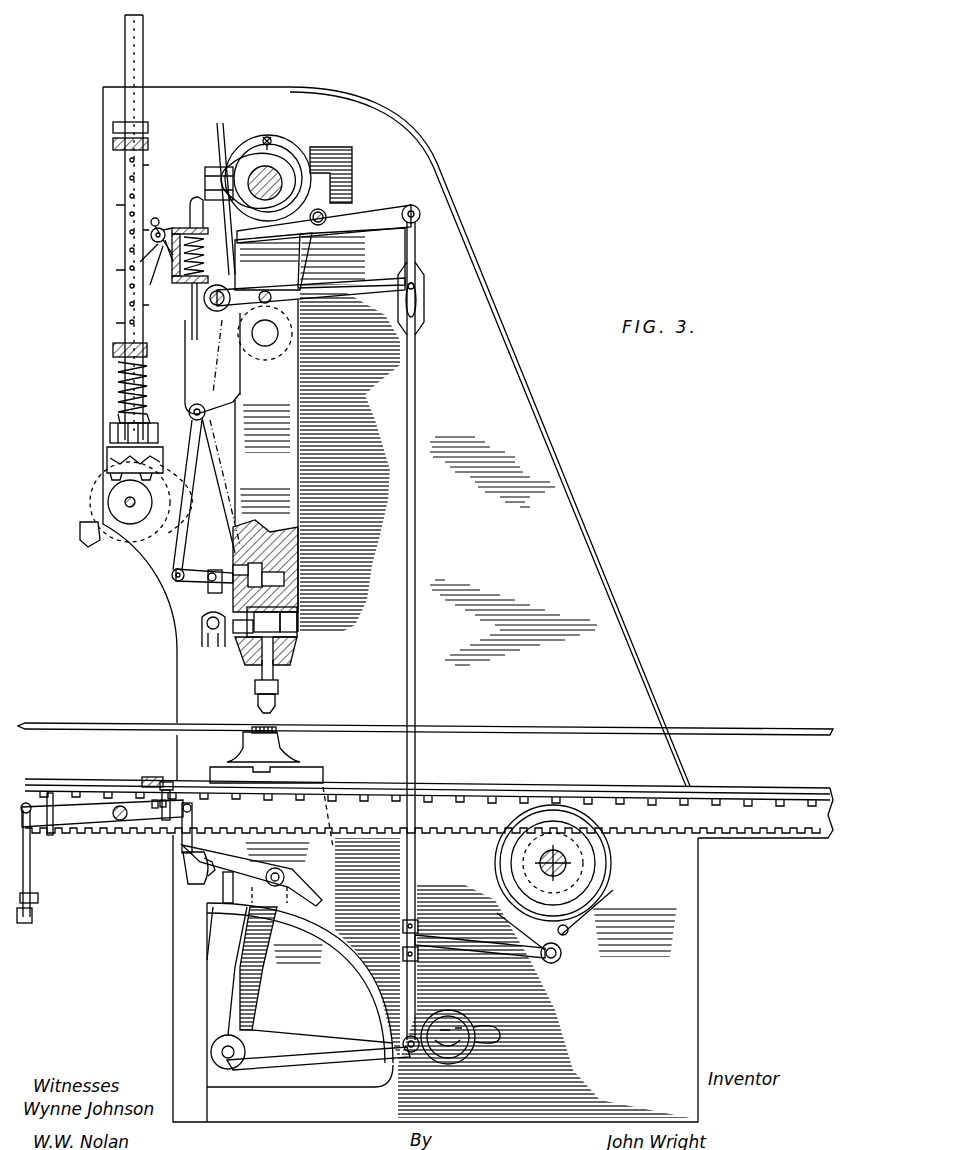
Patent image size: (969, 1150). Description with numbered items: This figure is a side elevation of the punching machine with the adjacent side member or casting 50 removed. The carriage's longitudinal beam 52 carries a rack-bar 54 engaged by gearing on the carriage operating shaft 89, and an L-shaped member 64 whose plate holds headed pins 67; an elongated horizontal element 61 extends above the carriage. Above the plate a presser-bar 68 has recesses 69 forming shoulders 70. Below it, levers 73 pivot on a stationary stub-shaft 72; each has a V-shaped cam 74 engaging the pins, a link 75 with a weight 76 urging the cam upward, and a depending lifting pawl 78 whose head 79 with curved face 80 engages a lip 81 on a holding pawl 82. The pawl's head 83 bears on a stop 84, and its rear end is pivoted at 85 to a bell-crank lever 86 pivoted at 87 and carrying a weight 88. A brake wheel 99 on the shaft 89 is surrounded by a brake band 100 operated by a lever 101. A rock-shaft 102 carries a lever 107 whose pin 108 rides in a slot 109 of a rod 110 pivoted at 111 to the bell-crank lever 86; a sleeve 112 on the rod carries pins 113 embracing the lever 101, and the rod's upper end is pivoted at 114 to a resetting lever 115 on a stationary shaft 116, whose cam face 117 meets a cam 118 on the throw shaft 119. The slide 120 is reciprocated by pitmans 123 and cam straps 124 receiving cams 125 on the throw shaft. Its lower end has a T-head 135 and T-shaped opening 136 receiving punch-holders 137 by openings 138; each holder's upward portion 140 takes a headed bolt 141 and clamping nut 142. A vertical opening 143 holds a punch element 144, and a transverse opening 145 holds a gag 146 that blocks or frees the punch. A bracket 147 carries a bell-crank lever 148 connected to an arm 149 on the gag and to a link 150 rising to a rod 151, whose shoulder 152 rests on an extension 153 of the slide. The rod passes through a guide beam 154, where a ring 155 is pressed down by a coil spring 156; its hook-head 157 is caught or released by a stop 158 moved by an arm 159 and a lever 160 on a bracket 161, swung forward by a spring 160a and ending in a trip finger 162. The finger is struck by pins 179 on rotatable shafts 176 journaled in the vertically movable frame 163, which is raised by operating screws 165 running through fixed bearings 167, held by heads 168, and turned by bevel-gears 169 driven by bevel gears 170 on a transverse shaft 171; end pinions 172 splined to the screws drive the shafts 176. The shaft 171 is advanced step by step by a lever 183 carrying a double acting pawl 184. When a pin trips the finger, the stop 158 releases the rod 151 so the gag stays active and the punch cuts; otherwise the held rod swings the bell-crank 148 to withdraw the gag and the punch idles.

The side members or castings 50 is at (578, 522).
The longitudinal beams 52 is at (705, 782).
The rack-bars 54 is at (758, 836).
The blade 61 is at (695, 726).
The horizontal plate or member 64 is at (788, 792).
The headed vertically movable pins 67 is at (490, 780).
The presser-bars 68 is at (150, 777).
The openings or recesses 69 is at (170, 790).
The shoulders 70 is at (152, 804).
The stationary horizontal stub-shaft 72 is at (118, 822).
The levers 73 is at (65, 808).
The V-shaped portion or cam 74 is at (163, 808).
The link 75 is at (32, 872).
The weight 76 is at (38, 900).
The depending lifting pawl 78 is at (195, 830).
The head 79 is at (185, 855).
The curved face 80 is at (195, 868).
The lip or extension 81 is at (190, 884).
The holding pawl 82 is at (285, 878).
The head 83 is at (207, 920).
The stop 84 is at (228, 905).
The pivotal connection 85 is at (300, 895).
The bell-crank lever 86 is at (252, 1005).
The pivot 87 is at (222, 1058).
The weight 88 is at (385, 1016).
The carriage operating shaft 89 is at (570, 866).
The brake wheel 99 is at (590, 882).
The brake band 100 is at (580, 928).
The lever 101 is at (470, 942).
The rock-shaft 102 is at (275, 283).
The lever 107 is at (378, 292).
The pin 108 is at (425, 292).
The elongated slot 109 is at (418, 312).
The rod 110 is at (417, 628).
The pivot 111 is at (405, 1050).
The sleeve 112 is at (425, 928).
The pins or trunnions 113 is at (415, 925).
The pivot 114 is at (422, 214).
The resetting lever 115 is at (365, 210).
The stationary shaft 116 is at (325, 212).
The cam face 117 is at (226, 175).
The cam 118 is at (236, 180).
The throw shaft 119 is at (280, 175).
The slide or carriage 120 is at (290, 443).
The pitmans 123 is at (320, 256).
The cam straps 124 is at (277, 170).
The cams 125 is at (330, 160).
The T-head 135 is at (300, 588).
The T-shaped opening 136 is at (300, 568).
The punch-holders 137 is at (292, 650).
The openings 138 is at (300, 598).
The upwardly extending portion 140 is at (228, 545).
The headed bolt 141 is at (264, 545).
The clamping nut 142 is at (230, 567).
The vertical opening 143 is at (280, 668).
The headed punch element 144 is at (280, 690).
The transverse opening 145 is at (300, 630).
The reciprocatory gag 146 is at (243, 657).
The bracket 147 is at (205, 628).
The bell-crank lever 148 is at (200, 595).
The arm 149 is at (225, 650).
The link 150 is at (170, 580).
The vertically reciprocatory rod 151 is at (148, 350).
The projection or shoulder 152 is at (215, 405).
The extension 153 is at (232, 440).
The guide beam 154 is at (177, 228).
The ring 155 is at (190, 288).
The coil spring 156 is at (210, 245).
The hook-head 157 is at (192, 200).
The reciprocatory stop 158 is at (152, 224).
The arm 159 is at (150, 242).
The lever 160 is at (145, 312).
The spring 160a is at (140, 322).
The bracket 161 is at (142, 262).
The trip finger 162 is at (152, 282).
The frame 163 is at (113, 145).
The vertical operating screws 165 is at (125, 392).
The fixed bearings 167 is at (108, 468).
The heads 168 is at (110, 440).
The bevel-gears 169 is at (108, 505).
The bevel gears 170 is at (152, 593).
The transverse shaft 171 is at (128, 522).
The outer or end pinions 172 is at (113, 127).
The vertically rotatable shafts 176 is at (124, 190).
The pins 179 is at (128, 232).
The lever 183 is at (80, 530).
The double acting pawl 184 is at (95, 542).